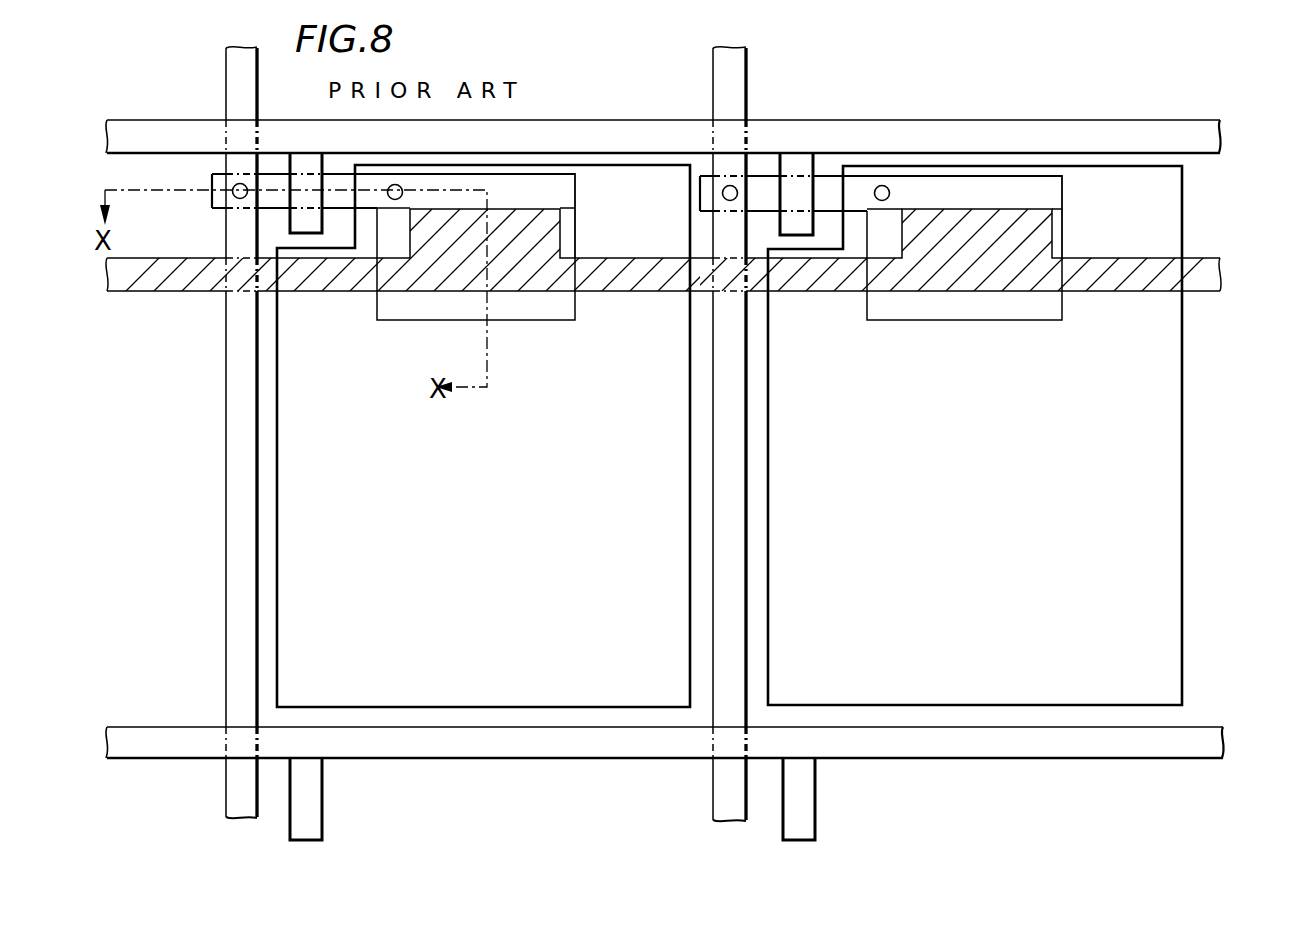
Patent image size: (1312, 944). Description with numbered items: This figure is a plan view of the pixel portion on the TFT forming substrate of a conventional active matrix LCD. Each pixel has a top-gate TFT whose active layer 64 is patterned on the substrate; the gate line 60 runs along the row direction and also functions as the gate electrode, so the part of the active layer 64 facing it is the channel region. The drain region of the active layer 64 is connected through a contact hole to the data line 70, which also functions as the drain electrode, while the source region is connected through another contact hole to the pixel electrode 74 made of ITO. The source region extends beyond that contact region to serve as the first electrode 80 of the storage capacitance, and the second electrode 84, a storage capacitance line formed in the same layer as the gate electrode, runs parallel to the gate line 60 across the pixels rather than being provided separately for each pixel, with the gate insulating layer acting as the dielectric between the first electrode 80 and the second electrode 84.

The gate line 60 is at (1022, 121).
The active layer 64 is at (762, 177).
The data line 70 is at (747, 52).
The pixel electrode 74 is at (690, 555).
The first electrode 80 is at (972, 321).
The second electrode 84 is at (1200, 257).